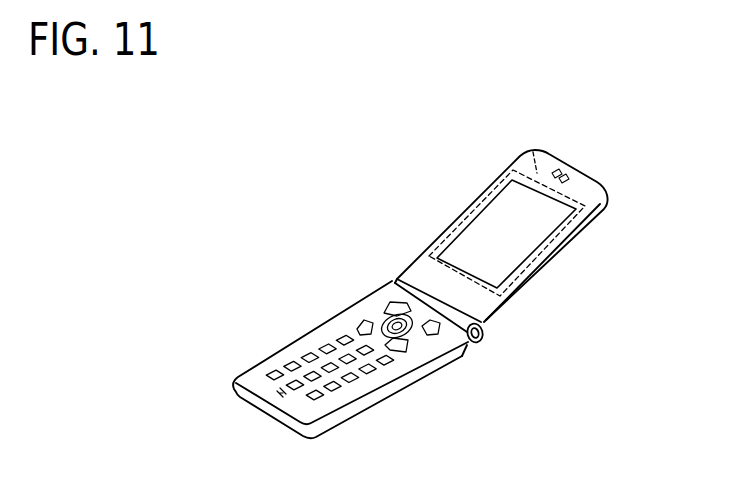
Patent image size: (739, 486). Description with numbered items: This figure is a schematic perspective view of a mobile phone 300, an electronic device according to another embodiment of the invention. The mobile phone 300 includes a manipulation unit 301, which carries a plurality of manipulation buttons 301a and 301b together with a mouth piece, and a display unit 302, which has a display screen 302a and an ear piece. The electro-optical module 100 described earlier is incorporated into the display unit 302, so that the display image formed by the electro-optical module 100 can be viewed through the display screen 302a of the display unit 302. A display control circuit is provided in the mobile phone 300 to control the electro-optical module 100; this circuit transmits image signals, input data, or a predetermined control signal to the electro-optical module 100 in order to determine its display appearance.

The mobile phone 300 is at (306, 94).
The electro-optical module 100 is at (533, 150).
The manipulation unit 301 is at (293, 342).
The manipulation button 301a is at (366, 372).
The manipulation button 301b is at (458, 352).
The display unit 302 is at (557, 260).
The display screen 302a is at (487, 236).